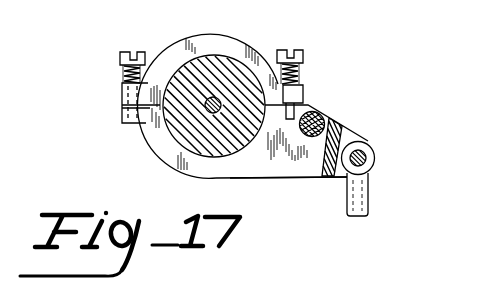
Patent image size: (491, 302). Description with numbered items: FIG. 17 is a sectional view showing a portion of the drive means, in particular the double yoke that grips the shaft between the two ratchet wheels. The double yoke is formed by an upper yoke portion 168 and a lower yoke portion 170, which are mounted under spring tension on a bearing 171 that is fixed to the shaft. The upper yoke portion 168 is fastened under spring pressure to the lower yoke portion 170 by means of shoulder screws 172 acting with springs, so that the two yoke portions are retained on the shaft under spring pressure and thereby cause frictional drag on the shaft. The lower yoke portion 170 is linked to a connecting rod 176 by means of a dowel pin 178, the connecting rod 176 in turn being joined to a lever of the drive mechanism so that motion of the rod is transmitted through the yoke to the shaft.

The upper yoke portion 168 is at (206, 33).
The lower yoke portion 170 is at (343, 135).
The bearing 171 is at (189, 144).
The shoulder screws 172 is at (125, 52).
The connecting rod 176 is at (262, 178).
The dowel pin 178 is at (369, 157).